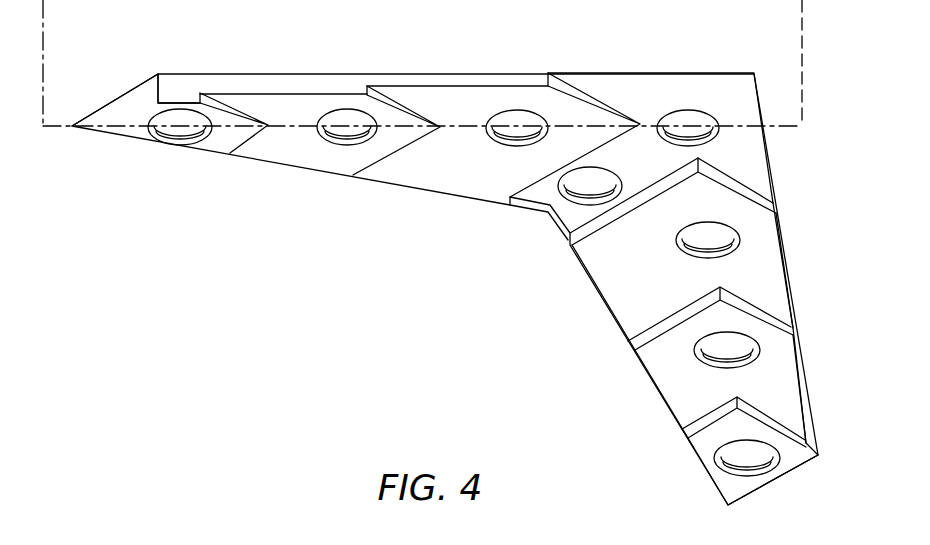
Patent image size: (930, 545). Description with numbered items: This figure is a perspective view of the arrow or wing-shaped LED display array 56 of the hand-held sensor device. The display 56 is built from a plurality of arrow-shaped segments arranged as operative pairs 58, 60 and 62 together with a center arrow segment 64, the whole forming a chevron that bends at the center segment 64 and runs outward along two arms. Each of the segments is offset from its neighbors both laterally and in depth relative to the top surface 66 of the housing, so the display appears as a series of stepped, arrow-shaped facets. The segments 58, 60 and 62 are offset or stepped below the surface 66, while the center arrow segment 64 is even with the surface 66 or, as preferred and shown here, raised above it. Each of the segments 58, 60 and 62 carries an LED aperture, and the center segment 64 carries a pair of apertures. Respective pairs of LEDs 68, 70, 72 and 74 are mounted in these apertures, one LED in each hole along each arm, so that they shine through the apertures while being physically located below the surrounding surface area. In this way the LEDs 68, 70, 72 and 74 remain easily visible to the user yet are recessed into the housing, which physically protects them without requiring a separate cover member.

The LED display array 56 is at (805, 178).
The arrow-shaped segment pair 58 is at (147, 117).
The arrow-shaped segment pair 60 is at (273, 103).
The arrow-shaped segment pair 62 is at (457, 92).
The center arrow segment 64 is at (622, 80).
The top surface 66 is at (343, 74).
The LED pair 68 is at (177, 137).
The LED pair 70 is at (342, 137).
The LED pair 72 is at (512, 137).
The LED pair 74 is at (688, 117).